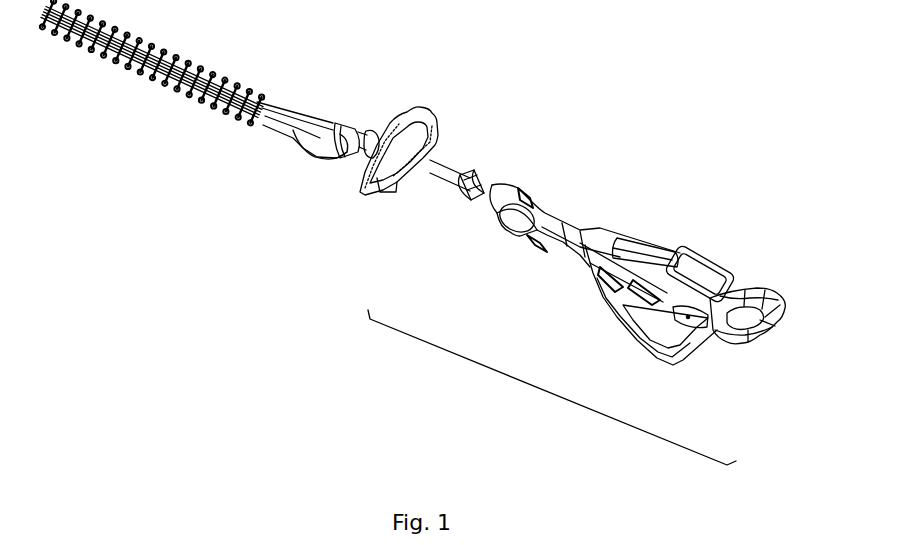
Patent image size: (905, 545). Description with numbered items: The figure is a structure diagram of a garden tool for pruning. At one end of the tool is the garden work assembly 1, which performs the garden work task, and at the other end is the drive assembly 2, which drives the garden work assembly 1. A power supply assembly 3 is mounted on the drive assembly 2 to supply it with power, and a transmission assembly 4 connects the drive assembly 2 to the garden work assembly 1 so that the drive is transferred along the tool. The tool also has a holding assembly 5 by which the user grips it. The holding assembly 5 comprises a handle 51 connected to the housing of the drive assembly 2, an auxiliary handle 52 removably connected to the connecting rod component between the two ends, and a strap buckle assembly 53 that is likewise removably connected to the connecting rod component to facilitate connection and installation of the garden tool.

The garden work assembly 1 is at (133, 65).
The drive assembly 2 is at (622, 250).
The power supply assembly 3 is at (697, 280).
The transmission assembly 4 is at (290, 112).
The holding assembly 5 is at (545, 390).
The handle 51 is at (728, 345).
The auxiliary handle 52 is at (383, 195).
The strap buckle assembly 53 is at (473, 203).